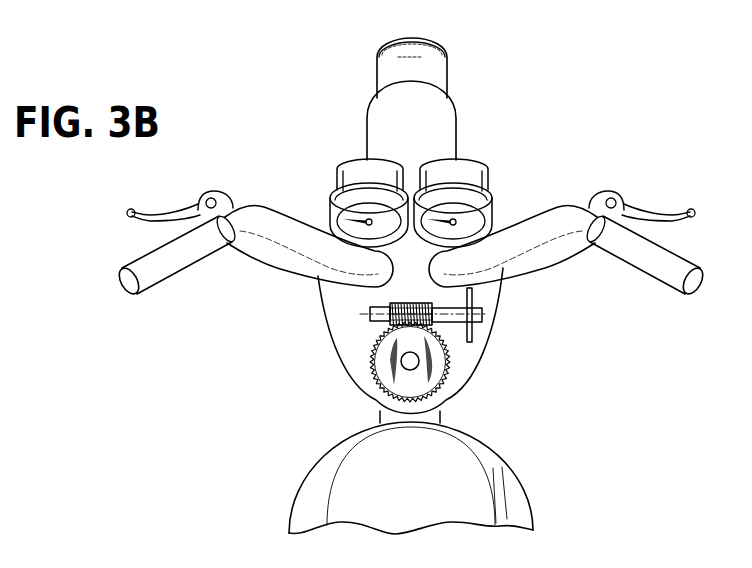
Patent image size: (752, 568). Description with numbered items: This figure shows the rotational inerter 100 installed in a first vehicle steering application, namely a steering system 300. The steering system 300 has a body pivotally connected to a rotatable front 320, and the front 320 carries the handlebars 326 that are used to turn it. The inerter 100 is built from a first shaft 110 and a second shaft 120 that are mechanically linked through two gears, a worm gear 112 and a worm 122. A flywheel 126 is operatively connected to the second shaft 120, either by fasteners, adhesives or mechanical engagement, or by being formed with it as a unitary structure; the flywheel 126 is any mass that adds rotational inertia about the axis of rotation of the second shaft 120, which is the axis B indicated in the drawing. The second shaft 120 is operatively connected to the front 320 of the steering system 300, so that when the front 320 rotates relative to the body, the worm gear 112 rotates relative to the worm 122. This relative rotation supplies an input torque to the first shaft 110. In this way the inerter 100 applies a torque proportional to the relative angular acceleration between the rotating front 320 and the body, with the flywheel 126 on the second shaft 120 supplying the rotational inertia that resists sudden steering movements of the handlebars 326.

The steering system 300 is at (572, 101).
The rotatable front 320 is at (421, 248).
The handlebars 326 is at (532, 232).
The inerter 100 is at (361, 353).
The first shaft 110 is at (417, 369).
The worm gear 112 is at (450, 353).
The second shaft 120 is at (378, 325).
The worm 122 is at (403, 300).
The flywheel 126 is at (473, 295).
The axis B is at (355, 312).